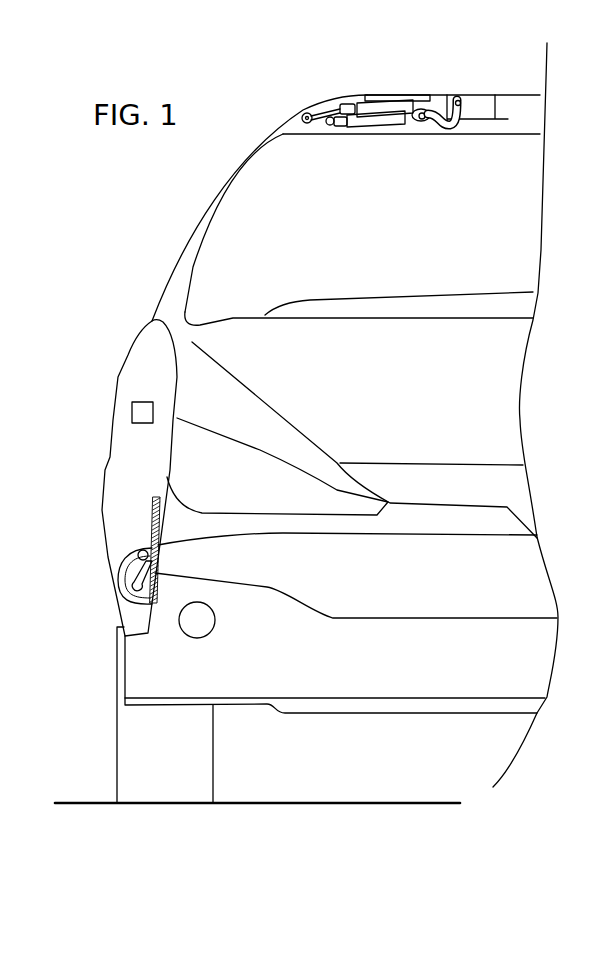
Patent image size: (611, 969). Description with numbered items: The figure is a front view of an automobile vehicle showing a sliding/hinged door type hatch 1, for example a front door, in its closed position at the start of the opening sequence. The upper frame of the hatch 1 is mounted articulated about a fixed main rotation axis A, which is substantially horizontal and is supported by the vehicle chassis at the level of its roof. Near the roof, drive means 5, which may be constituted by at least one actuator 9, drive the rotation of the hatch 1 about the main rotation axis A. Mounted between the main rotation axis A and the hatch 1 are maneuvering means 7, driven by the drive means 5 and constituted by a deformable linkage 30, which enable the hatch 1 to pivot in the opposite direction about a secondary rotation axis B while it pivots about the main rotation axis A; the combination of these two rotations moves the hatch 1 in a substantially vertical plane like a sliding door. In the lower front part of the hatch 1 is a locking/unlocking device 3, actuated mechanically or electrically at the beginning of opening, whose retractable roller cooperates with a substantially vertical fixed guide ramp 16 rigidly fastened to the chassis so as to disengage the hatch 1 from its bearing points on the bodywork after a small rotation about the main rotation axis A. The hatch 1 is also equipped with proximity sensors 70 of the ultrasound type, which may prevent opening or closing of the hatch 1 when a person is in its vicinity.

The hatch 1 is at (127, 341).
The locking/unlocking device 3 is at (112, 586).
The drive means 5 is at (383, 134).
The maneuvering means 7 is at (382, 92).
The actuator 9 is at (360, 122).
The fixed guide ramp 16 is at (155, 500).
The deformable linkage 30 is at (383, 110).
The proximity sensors 70 is at (138, 410).
The main rotation axis A is at (459, 105).
The secondary rotation axis B is at (304, 115).